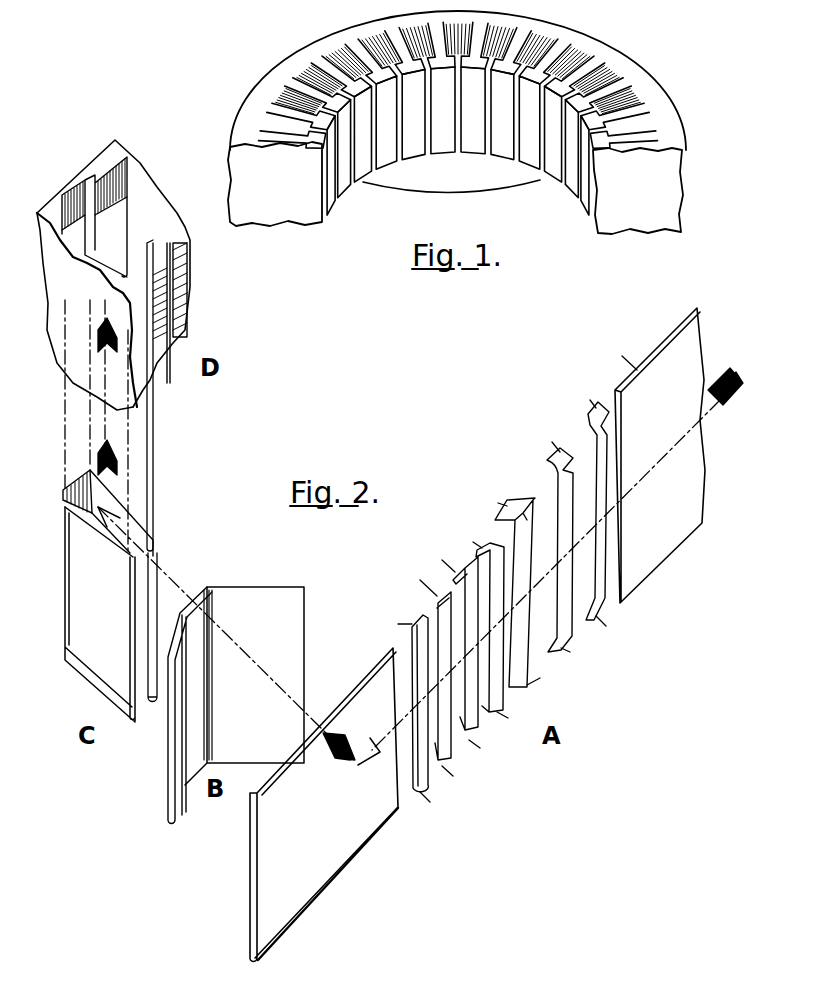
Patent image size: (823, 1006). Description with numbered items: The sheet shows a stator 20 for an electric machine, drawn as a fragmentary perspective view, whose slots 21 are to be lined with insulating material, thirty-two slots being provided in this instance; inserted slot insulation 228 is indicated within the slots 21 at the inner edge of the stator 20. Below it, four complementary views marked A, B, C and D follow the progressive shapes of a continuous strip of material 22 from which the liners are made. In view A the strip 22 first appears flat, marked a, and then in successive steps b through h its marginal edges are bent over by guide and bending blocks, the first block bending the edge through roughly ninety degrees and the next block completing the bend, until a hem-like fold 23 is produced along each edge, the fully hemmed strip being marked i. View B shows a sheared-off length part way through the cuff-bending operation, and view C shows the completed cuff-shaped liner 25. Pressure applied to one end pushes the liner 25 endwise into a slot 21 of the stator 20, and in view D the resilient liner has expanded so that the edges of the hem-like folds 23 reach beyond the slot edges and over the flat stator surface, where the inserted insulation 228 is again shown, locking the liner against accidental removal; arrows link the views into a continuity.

In FIG. 1, the stator 20 is at (693, 169).
In FIG. 2, the stator 20 is at (73, 180).
In FIG. 1, the slots 21 is at (248, 67).
In FIG. 2, the slots 21 is at (127, 167).
In FIG. 2, the strip of material 22 is at (663, 367).
In FIG. 2, the hem-like fold 23 is at (167, 240).
In FIG. 2, the cuff-shaped liner 25 is at (80, 595).
In FIG. 1, the slot insulation 228 is at (437, 157).
In FIG. 2, the slot insulation 228 is at (170, 300).